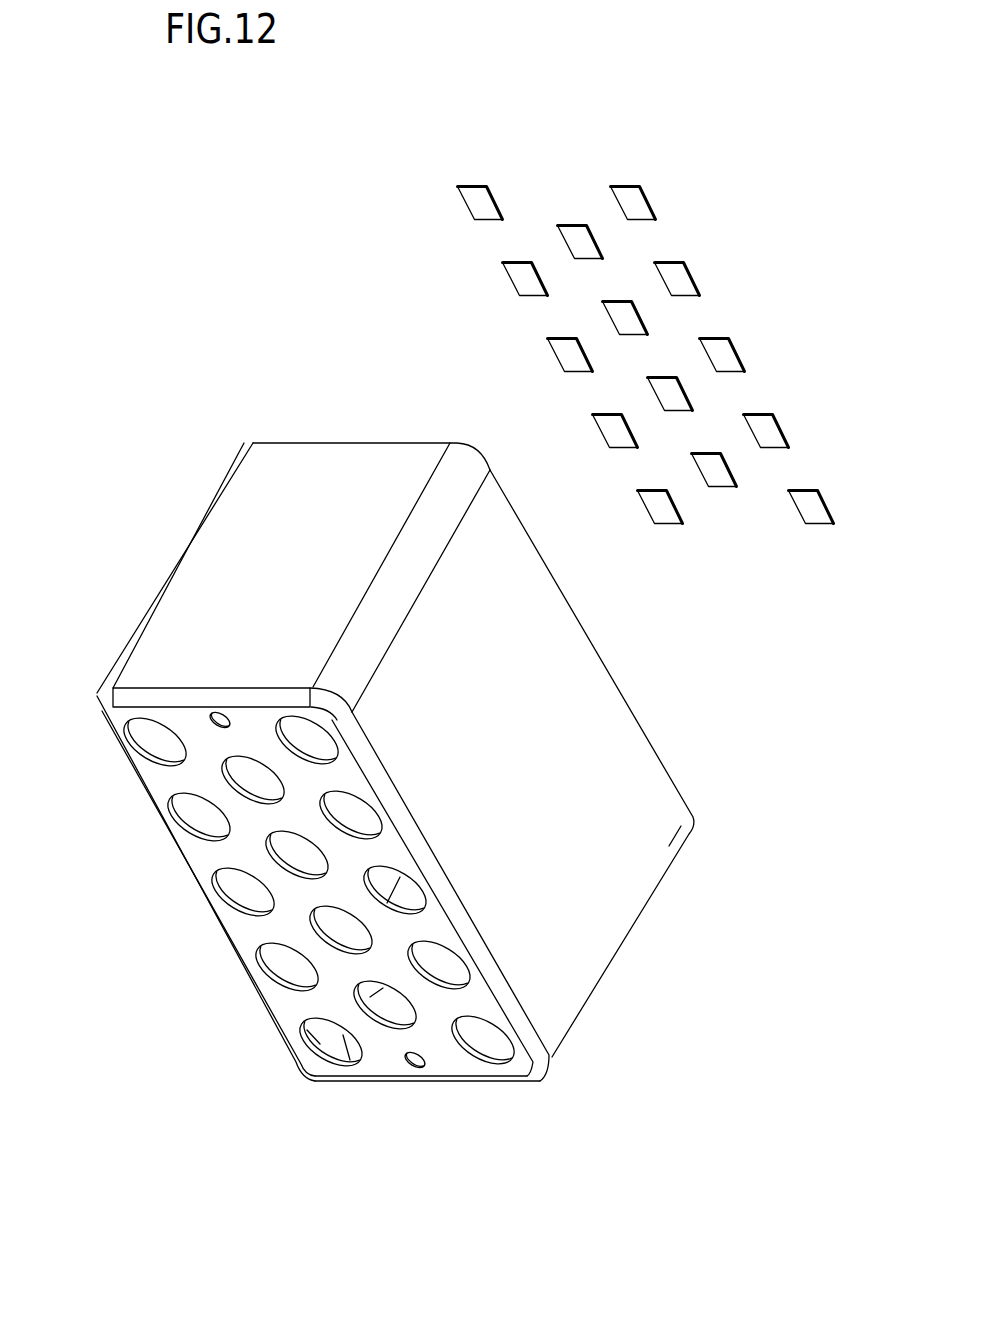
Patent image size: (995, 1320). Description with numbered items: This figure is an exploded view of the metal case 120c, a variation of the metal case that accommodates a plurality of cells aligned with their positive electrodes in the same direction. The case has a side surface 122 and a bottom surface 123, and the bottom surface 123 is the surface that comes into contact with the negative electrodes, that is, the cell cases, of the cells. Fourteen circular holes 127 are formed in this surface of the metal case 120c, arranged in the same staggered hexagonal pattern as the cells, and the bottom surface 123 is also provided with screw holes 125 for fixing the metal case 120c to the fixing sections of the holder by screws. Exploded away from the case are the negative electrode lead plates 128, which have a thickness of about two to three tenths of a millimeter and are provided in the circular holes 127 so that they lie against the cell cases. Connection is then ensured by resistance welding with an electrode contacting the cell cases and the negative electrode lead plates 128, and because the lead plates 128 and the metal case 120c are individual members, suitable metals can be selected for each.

The metal case 120c is at (283, 157).
The side surface 122 is at (232, 527).
The bottom surface 123 is at (168, 777).
The screw holes 125 is at (422, 1063).
The circular holes 127 is at (240, 888).
The negative electrode lead plates 128 is at (495, 283).